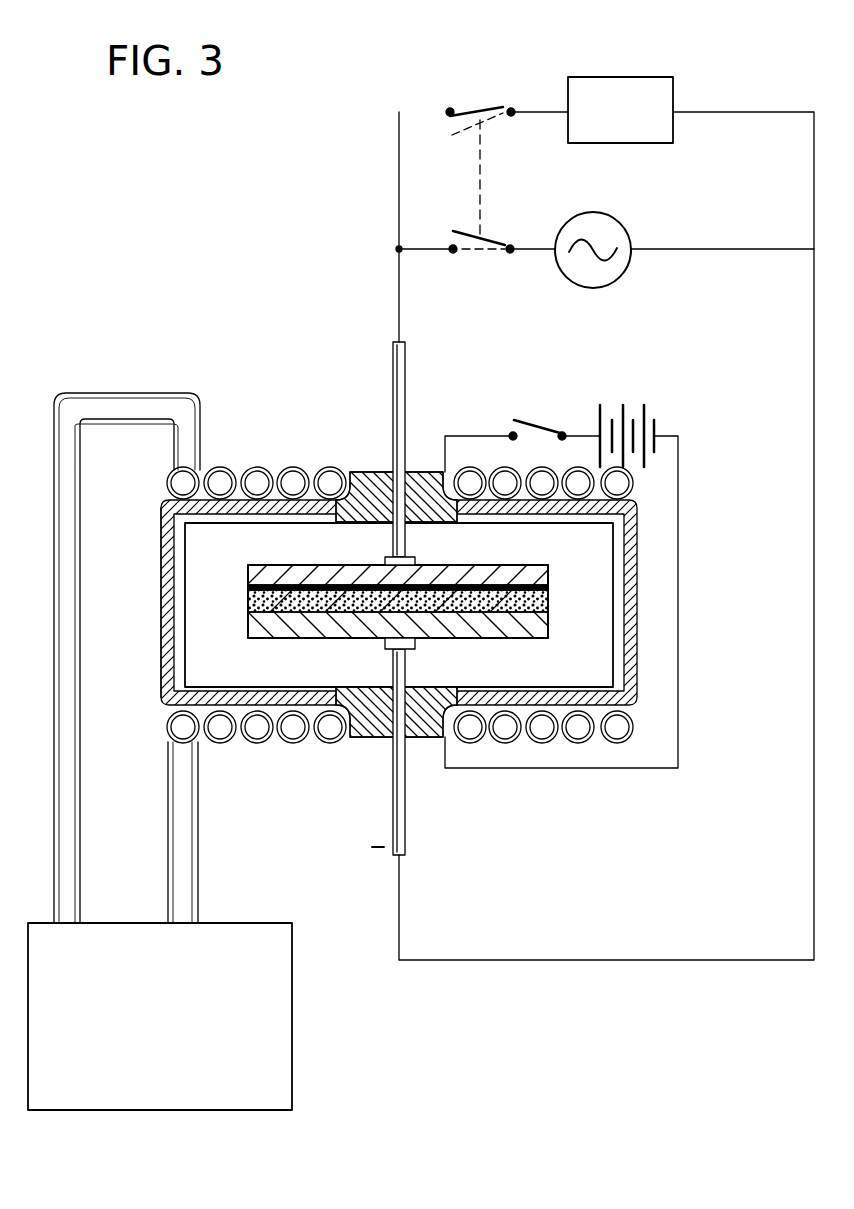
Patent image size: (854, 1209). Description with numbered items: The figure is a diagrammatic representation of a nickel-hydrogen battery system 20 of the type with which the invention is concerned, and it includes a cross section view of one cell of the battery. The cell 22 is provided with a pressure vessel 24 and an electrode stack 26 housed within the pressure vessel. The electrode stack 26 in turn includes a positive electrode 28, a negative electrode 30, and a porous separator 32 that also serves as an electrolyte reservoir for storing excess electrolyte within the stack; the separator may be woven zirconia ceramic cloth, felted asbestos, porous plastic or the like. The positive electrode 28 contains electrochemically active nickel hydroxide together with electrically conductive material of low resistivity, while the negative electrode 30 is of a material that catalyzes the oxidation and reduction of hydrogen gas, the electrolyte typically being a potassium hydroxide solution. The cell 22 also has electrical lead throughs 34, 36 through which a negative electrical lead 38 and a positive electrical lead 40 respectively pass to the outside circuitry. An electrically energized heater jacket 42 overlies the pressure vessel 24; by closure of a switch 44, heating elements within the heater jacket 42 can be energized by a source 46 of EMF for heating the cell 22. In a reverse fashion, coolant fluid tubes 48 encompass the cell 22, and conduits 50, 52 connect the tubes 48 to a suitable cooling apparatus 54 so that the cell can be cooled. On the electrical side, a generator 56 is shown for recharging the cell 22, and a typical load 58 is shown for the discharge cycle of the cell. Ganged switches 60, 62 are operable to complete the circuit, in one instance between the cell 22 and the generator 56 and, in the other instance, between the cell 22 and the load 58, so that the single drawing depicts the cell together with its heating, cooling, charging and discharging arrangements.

The nickel-hydrogen battery system 20 is at (229, 253).
The cell 22 is at (633, 603).
The pressure vessel 24 is at (172, 640).
The electrode stack 26 is at (400, 603).
The positive electrode 28 is at (241, 568).
The negative electrode 30 is at (530, 630).
The porous separator 32 is at (545, 604).
The electrical lead through 34 is at (382, 740).
The electrical lead through 36 is at (412, 472).
The negative electrical lead 38 is at (400, 826).
The positive electrical lead 40 is at (393, 430).
The heater jacket 42 is at (166, 540).
The switch 44 is at (535, 425).
The source of EMF 46 is at (640, 420).
The coolant fluid tubes 48 is at (262, 467).
The conduit 50 is at (65, 788).
The conduit 52 is at (178, 842).
The cooling apparatus 54 is at (275, 1025).
The generator 56 is at (619, 226).
The load 58 is at (592, 80).
The ganged switch 60 is at (486, 243).
The ganged switch 62 is at (490, 110).